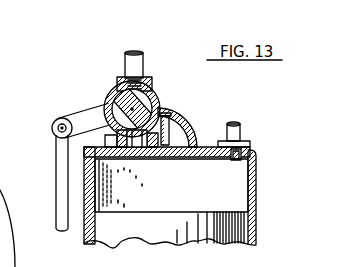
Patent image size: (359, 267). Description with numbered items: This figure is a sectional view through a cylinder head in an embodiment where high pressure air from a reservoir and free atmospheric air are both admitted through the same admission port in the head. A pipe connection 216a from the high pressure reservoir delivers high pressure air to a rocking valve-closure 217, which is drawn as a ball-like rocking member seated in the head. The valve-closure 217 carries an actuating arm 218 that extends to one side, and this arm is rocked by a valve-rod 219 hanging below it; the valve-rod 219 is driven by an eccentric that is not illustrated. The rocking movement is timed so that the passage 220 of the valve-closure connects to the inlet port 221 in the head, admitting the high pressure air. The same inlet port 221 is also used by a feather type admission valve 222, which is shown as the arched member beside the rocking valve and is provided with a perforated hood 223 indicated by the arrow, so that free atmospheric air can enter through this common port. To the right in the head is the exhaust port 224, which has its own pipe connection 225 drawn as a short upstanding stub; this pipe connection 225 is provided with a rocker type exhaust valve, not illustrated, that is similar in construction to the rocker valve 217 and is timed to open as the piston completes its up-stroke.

The pipe connection 216a is at (135, 51).
The rocking valve-closure 217 is at (160, 106).
The actuating arm 218 is at (92, 117).
The valve-rod 219 is at (60, 188).
The passage 220 is at (116, 92).
The inlet port 221 is at (127, 160).
The feather type admission valve 222 is at (180, 118).
The perforated hood 223 is at (187, 132).
The exhaust port 224 is at (235, 160).
The pipe connection 225 is at (240, 133).